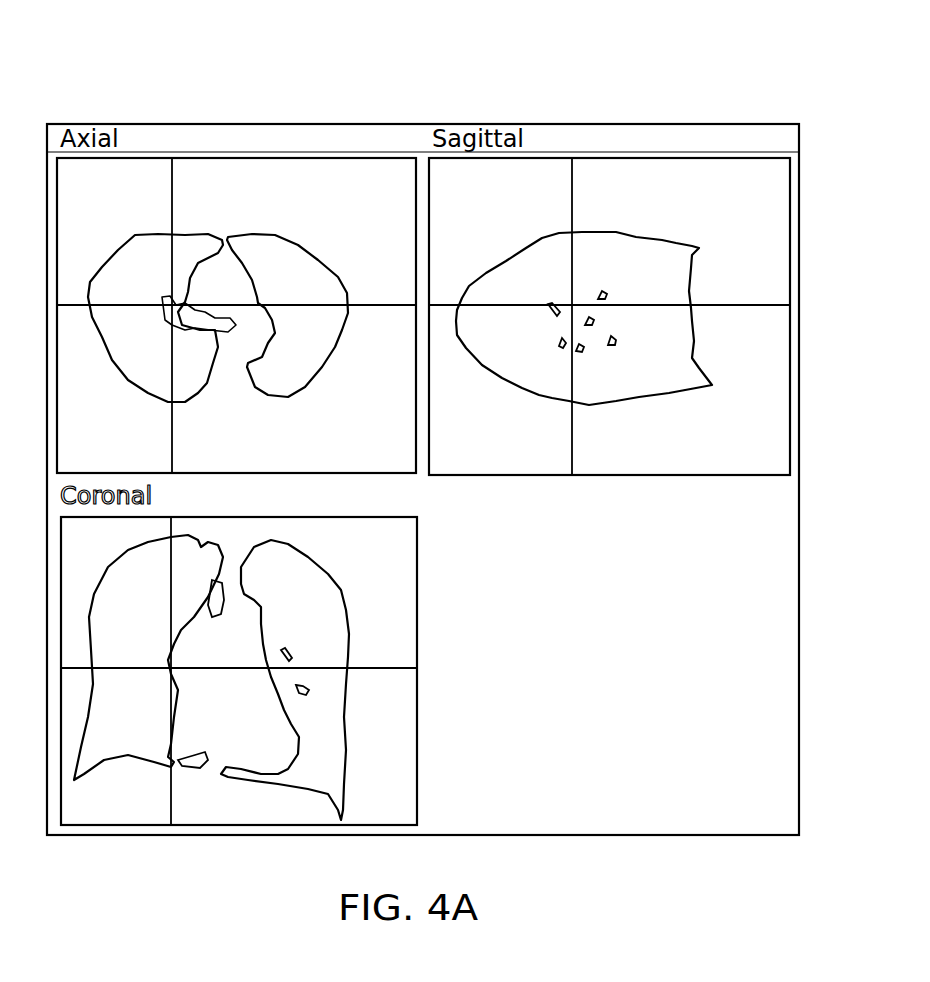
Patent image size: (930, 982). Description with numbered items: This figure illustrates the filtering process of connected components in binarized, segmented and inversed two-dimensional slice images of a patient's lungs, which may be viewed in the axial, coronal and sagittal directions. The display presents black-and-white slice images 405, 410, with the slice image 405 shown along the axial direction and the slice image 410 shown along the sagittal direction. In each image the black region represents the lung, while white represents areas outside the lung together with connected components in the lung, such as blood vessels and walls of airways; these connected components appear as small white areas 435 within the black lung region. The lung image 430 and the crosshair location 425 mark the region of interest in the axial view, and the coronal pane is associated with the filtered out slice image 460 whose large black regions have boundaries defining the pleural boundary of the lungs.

The 2D slice image 405 is at (115, 122).
The 2D slice image 410 is at (482, 122).
The axial lung image 430 is at (269, 222).
The crosshair target location 425 is at (552, 321).
The small white areas 435 is at (612, 360).
The filtered out 2D slice image 460 is at (123, 842).